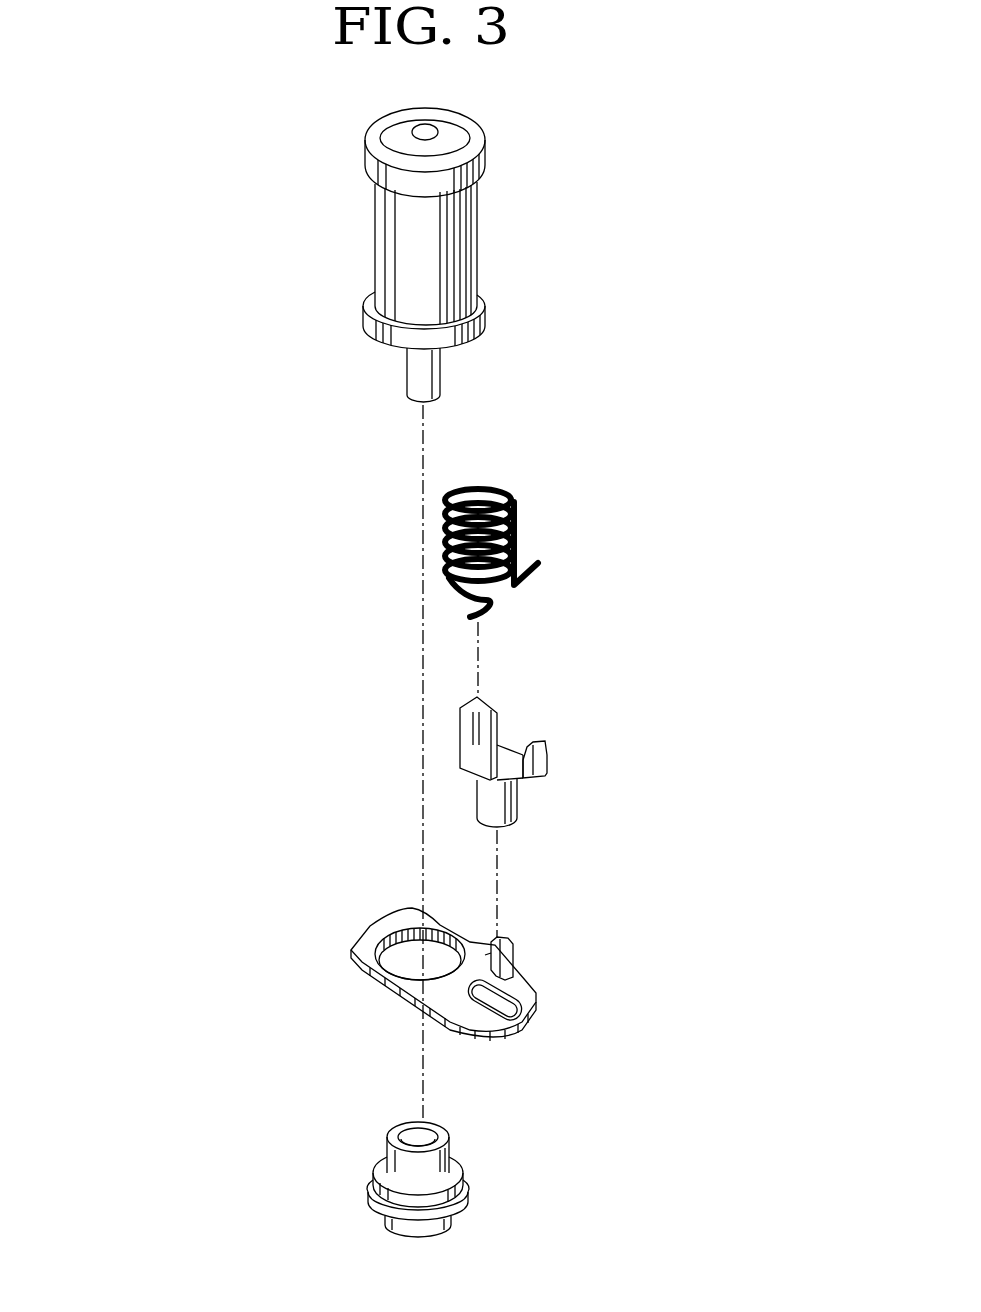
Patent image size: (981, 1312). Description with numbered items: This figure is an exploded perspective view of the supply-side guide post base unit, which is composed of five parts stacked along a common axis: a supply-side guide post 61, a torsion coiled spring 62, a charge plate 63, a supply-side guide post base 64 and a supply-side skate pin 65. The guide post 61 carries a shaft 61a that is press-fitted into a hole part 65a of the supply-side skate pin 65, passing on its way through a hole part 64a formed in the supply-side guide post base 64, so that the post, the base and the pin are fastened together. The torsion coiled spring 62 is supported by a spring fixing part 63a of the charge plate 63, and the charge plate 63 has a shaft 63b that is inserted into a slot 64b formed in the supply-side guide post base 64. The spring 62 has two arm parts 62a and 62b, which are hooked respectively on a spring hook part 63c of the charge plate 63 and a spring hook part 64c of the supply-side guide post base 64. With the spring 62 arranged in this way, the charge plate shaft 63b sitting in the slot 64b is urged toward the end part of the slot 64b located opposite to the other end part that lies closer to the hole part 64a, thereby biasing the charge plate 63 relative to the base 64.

The supply-side guide post 61 is at (453, 237).
The shaft 61a is at (427, 378).
The torsion coiled spring 62 is at (500, 532).
The arm part 62a is at (483, 617).
The arm part 62b is at (538, 563).
The charge plate 63 is at (503, 750).
The spring fixing part 63a is at (470, 729).
The shaft 63b is at (497, 803).
The spring hook part 63c is at (547, 753).
The supply-side guide post base 64 is at (443, 990).
The hole part 64a is at (402, 952).
The slot 64b is at (507, 1008).
The spring hook part 64c is at (515, 945).
The supply-side skate pin 65 is at (427, 1168).
The hole part 65a is at (417, 1140).